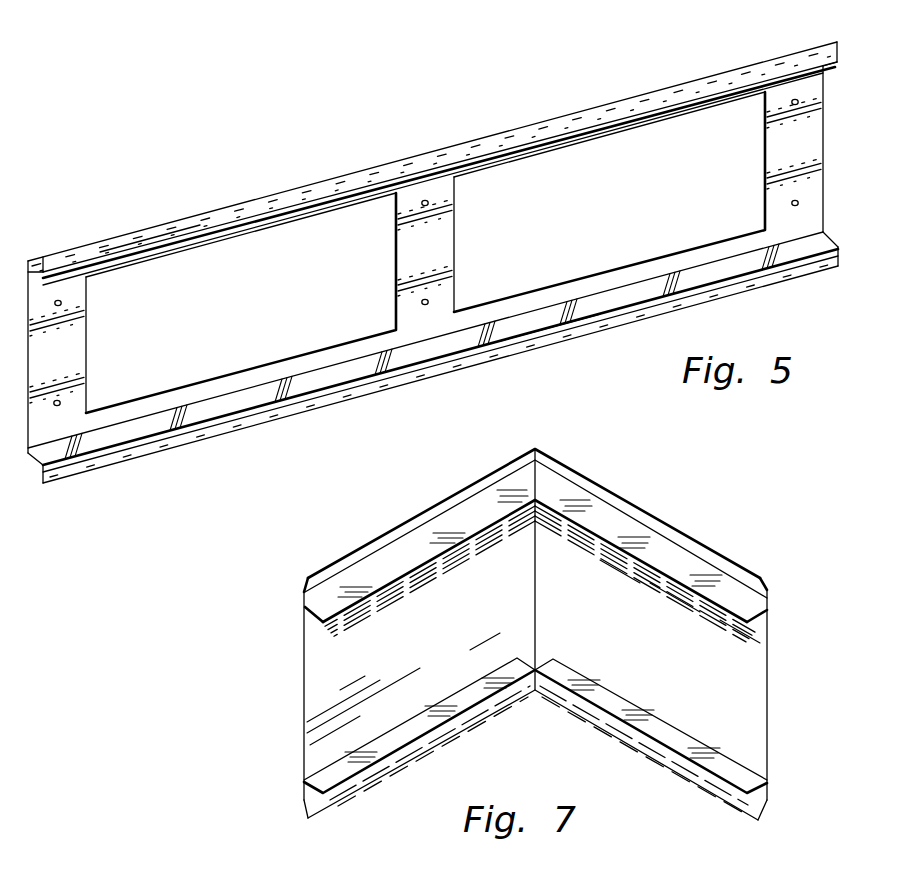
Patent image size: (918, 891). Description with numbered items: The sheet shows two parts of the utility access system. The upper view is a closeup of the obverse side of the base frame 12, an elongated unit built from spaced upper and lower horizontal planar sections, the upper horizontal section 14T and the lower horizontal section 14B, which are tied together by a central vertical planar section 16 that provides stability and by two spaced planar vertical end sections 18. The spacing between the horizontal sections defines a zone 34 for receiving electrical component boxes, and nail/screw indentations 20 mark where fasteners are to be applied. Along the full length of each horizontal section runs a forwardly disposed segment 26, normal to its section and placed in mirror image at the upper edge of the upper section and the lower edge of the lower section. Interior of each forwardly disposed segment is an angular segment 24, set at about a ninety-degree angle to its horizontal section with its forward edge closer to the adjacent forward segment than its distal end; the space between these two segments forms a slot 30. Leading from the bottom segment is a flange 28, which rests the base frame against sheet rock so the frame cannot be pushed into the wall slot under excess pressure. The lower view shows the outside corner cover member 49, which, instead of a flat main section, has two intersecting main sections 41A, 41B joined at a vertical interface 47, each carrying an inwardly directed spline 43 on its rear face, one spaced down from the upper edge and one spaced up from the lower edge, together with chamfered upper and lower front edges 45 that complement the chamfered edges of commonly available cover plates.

In FIG. 5, the base frame 12 is at (390, 150).
In FIG. 5, the upper horizontal section 14T is at (252, 222).
In FIG. 5, the lower horizontal section 14B is at (246, 366).
In FIG. 5, the central vertical planar section 16 is at (440, 262).
In FIG. 5, the planar vertical end section 18 is at (75, 364).
In FIG. 5, the nail/screw indentation 20 is at (429, 302).
In FIG. 5, the angular segment 24 is at (810, 72).
In FIG. 5, the forwardly disposed segment 26 is at (30, 262).
In FIG. 5, the flange 28 is at (196, 226).
In FIG. 5, the slot 30 is at (836, 60).
In FIG. 5, the zone 34 is at (193, 332).
In FIG. 7, the main section 41A is at (428, 647).
In FIG. 7, the main section 41B is at (702, 655).
In FIG. 7, the flange 43 is at (420, 555).
In FIG. 7, the chamfered edge 45 is at (304, 590).
In FIG. 7, the vertical interface 47 is at (536, 578).
In FIG. 7, the outside corner cover member 49 is at (272, 680).